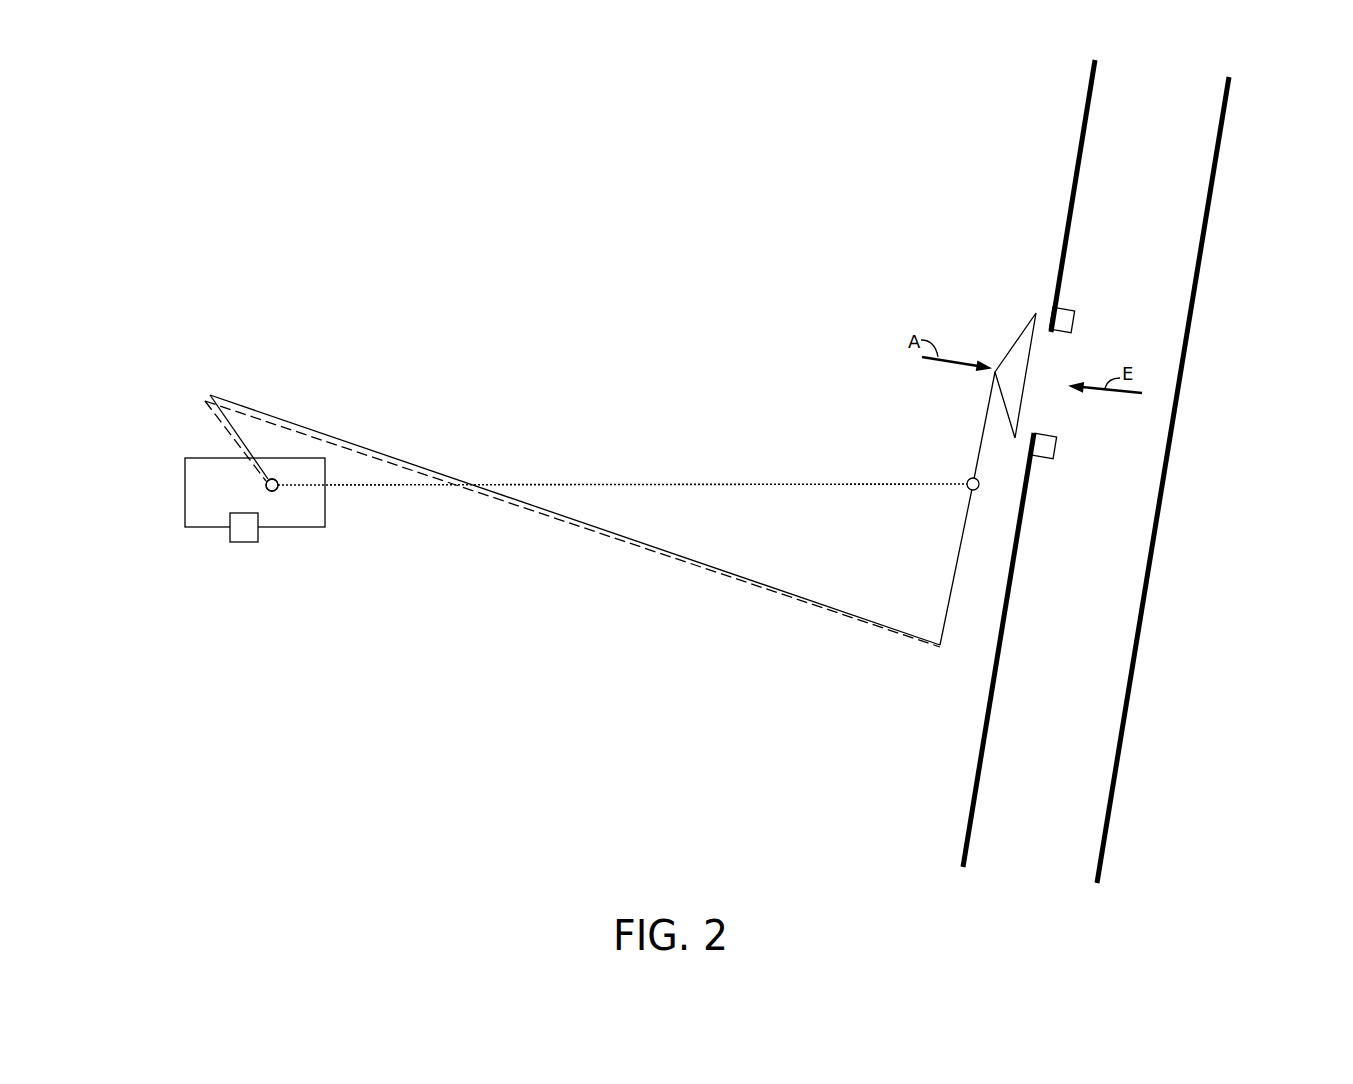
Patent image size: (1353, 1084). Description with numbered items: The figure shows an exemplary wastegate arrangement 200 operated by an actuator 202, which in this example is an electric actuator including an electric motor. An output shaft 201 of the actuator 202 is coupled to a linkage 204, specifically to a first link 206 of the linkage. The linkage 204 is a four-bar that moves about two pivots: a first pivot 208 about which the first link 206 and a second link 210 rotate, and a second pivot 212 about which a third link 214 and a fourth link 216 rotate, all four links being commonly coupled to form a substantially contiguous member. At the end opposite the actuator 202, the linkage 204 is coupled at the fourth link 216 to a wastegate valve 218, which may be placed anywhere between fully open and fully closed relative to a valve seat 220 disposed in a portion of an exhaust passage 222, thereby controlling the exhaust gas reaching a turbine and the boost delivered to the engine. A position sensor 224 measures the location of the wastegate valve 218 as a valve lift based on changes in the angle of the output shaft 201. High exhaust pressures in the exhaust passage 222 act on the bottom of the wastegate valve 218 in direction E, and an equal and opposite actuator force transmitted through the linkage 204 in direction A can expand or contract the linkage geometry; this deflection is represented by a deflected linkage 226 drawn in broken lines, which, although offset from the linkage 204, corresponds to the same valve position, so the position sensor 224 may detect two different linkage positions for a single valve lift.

The wastegate arrangement 200 is at (600, 278).
The output shaft 201 is at (266, 486).
The actuator 202 is at (185, 458).
The linkage 204 is at (551, 572).
The first link 206 is at (210, 395).
The first pivot 208 is at (276, 490).
The second link 210 is at (367, 449).
The second pivot 212 is at (980, 489).
The third link 214 is at (951, 591).
The fourth link 216 is at (979, 455).
The wastegate valve 218 is at (1012, 347).
The valve seat 220 is at (1052, 333).
The exhaust passage 222 is at (1168, 265).
The position sensor 224 is at (258, 541).
The deflected linkage 226 is at (831, 611).